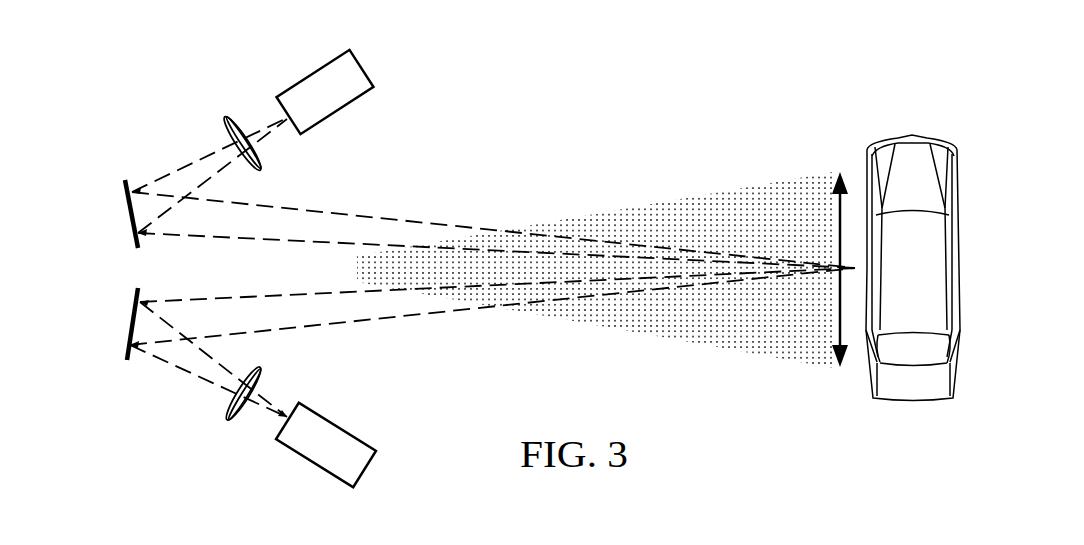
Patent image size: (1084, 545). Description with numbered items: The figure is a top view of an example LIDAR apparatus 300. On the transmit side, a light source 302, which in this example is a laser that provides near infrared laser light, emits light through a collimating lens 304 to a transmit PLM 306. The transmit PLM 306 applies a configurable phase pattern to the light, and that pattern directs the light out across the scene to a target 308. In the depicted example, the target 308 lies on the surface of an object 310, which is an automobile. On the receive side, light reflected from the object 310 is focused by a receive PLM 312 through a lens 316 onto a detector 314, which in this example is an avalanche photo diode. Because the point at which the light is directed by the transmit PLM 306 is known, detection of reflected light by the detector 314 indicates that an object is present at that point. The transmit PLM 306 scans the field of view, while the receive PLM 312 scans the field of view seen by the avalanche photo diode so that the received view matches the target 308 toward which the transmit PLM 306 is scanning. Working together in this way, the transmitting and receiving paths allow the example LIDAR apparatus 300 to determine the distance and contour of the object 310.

The LIDAR apparatus 300 is at (683, 72).
The light source 302 is at (317, 72).
The collimating lens 304 is at (226, 117).
The transmit PLM 306 is at (126, 214).
The target 308 is at (848, 176).
The object 310 is at (923, 137).
The receive PLM 312 is at (126, 326).
The detector 314 is at (310, 467).
The lens 316 is at (228, 421).